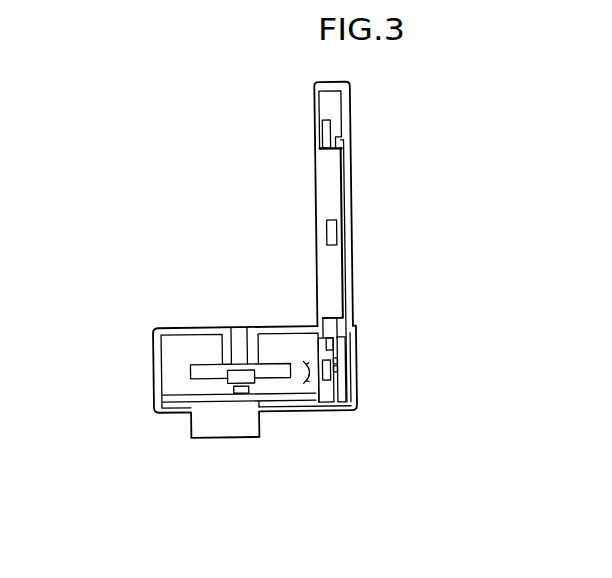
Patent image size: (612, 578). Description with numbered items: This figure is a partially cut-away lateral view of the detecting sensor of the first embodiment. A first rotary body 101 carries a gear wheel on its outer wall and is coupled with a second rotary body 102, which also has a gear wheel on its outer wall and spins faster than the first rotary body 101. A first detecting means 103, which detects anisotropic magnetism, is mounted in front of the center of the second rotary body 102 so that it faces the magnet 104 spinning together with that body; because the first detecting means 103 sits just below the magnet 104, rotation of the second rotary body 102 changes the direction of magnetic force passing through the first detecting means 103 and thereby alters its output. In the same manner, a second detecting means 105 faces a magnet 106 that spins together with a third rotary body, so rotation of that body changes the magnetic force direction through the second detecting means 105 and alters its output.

The first rotary body 101 is at (335, 168).
The second rotary body 102 is at (325, 402).
The first detecting means 103 is at (336, 369).
The magnet 104 is at (334, 361).
The second detecting means 105 is at (243, 386).
The magnet 106 is at (228, 373).